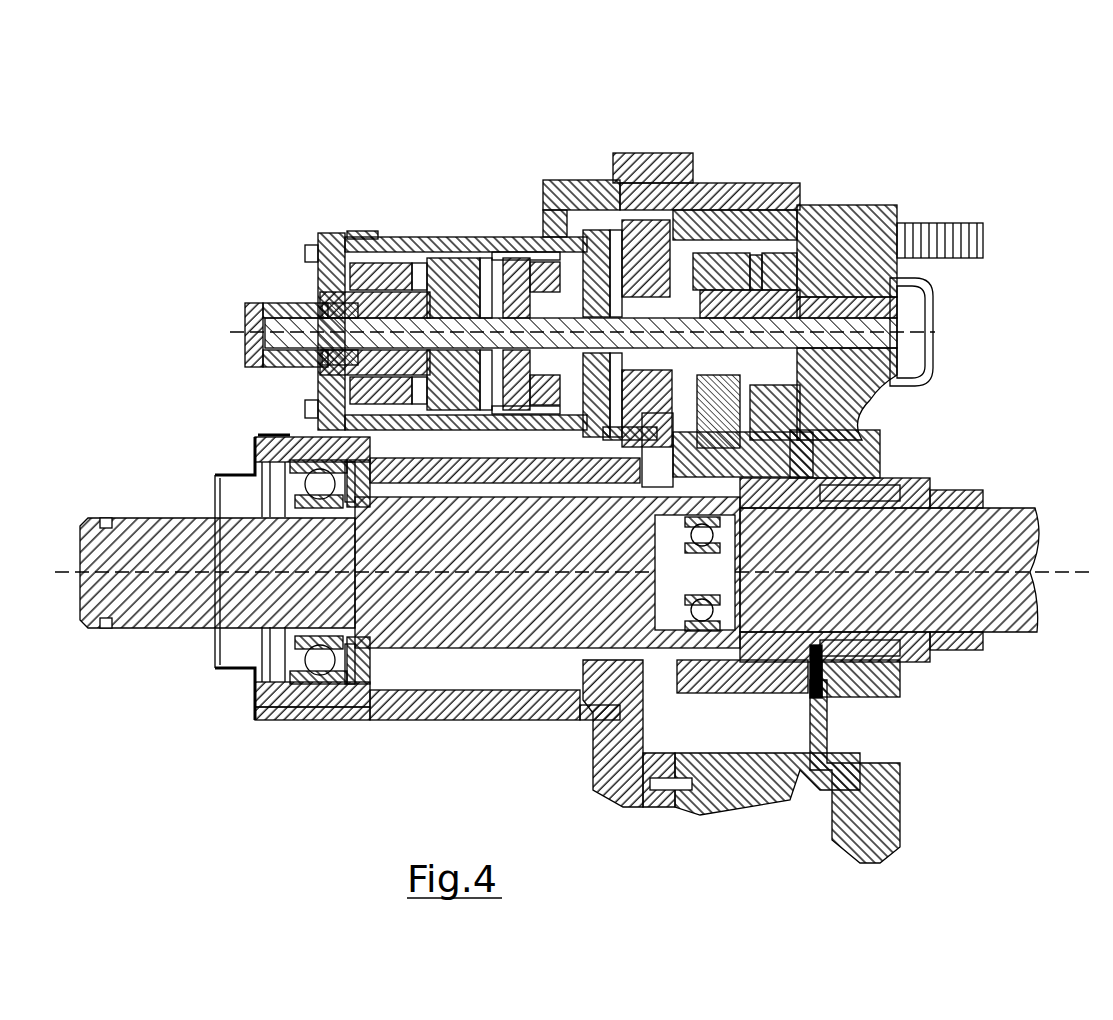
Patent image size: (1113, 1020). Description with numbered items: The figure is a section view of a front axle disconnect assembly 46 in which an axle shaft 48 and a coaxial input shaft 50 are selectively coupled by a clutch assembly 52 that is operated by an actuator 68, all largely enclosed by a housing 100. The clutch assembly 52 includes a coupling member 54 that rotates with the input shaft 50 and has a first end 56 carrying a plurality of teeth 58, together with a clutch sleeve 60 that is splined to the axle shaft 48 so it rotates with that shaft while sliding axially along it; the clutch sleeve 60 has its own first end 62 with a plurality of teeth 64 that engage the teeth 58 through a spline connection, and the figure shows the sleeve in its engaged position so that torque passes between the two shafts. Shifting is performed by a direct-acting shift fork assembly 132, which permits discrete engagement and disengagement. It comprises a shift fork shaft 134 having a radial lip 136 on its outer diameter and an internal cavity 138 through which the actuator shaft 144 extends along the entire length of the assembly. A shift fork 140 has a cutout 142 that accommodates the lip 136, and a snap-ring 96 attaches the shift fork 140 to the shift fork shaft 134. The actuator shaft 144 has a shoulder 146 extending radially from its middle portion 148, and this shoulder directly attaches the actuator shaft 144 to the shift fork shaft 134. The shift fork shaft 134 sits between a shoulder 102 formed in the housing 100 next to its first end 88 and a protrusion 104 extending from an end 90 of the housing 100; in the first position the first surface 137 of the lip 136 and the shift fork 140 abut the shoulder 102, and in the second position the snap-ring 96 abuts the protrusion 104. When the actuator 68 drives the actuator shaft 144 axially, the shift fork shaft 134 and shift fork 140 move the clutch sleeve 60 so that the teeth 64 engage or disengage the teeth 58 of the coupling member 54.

The axle disconnect assembly 46 is at (868, 120).
The axle shaft 48 is at (140, 612).
The input shaft 50 is at (997, 515).
The clutch assembly 52 is at (766, 720).
The coupling member 54 is at (865, 635).
The first end 56 is at (590, 680).
The plurality of teeth 58 is at (800, 688).
The clutch sleeve 60 is at (680, 690).
The first end 62 is at (807, 704).
The plurality of teeth 64 is at (870, 700).
The actuator 68 is at (337, 240).
The first end 88 is at (688, 398).
The end 90 is at (856, 200).
The snap-ring 96 is at (772, 315).
The housing 100 is at (731, 487).
The shoulder 102 is at (687, 382).
The protrusion 104 is at (770, 320).
The shift fork assembly 132 is at (892, 372).
The shift fork shaft 134 is at (790, 300).
The lip 136 is at (720, 280).
The first surface 137 is at (760, 437).
The internal cavity 138 is at (703, 280).
The shift fork 140 is at (745, 408).
The cutout 142 is at (752, 296).
The actuator shaft 144 is at (495, 330).
The shoulder 146 is at (680, 322).
The middle portion 148 is at (629, 309).